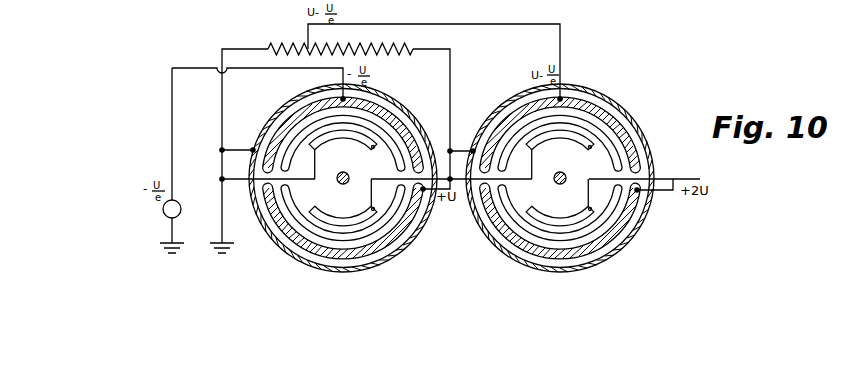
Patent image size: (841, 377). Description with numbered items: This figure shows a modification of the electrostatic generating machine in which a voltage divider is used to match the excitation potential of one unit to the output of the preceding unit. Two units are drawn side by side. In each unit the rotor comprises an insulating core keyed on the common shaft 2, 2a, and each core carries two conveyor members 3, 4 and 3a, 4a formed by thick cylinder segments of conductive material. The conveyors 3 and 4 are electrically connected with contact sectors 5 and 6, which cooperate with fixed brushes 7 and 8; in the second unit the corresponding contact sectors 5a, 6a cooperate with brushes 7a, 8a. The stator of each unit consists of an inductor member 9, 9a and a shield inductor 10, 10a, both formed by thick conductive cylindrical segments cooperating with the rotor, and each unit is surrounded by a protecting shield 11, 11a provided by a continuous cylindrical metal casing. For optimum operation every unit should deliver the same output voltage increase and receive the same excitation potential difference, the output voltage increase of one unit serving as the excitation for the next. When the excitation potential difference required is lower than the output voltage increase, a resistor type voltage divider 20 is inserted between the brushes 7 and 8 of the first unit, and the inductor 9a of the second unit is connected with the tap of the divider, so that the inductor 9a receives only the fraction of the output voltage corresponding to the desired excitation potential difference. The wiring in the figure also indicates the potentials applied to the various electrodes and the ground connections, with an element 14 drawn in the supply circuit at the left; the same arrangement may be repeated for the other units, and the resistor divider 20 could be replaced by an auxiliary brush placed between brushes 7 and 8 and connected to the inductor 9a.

The shaft 2 is at (345, 174).
The shaft 2a is at (555, 181).
The conveyor member 3 is at (297, 142).
The conveyor member 3a is at (511, 148).
The conveyor member 4 is at (292, 205).
The conveyor member 4a is at (511, 212).
The contact sector 5 is at (370, 142).
The contact sector 5a is at (587, 142).
The contact sector 6 is at (335, 224).
The contact sector 6a is at (536, 222).
The brush 7 is at (318, 157).
The brush 7a is at (531, 157).
The brush 8 is at (371, 198).
The brush 8a is at (589, 197).
The inductor member 9 is at (403, 131).
The inductor member 9a is at (609, 121).
The shield inductor 10 is at (320, 250).
The shield inductor 10a is at (530, 252).
The protecting shield 11 is at (386, 257).
The protecting shield 11a is at (632, 242).
The voltage source 14 is at (164, 213).
The resistor type voltage divider 20 is at (286, 46).